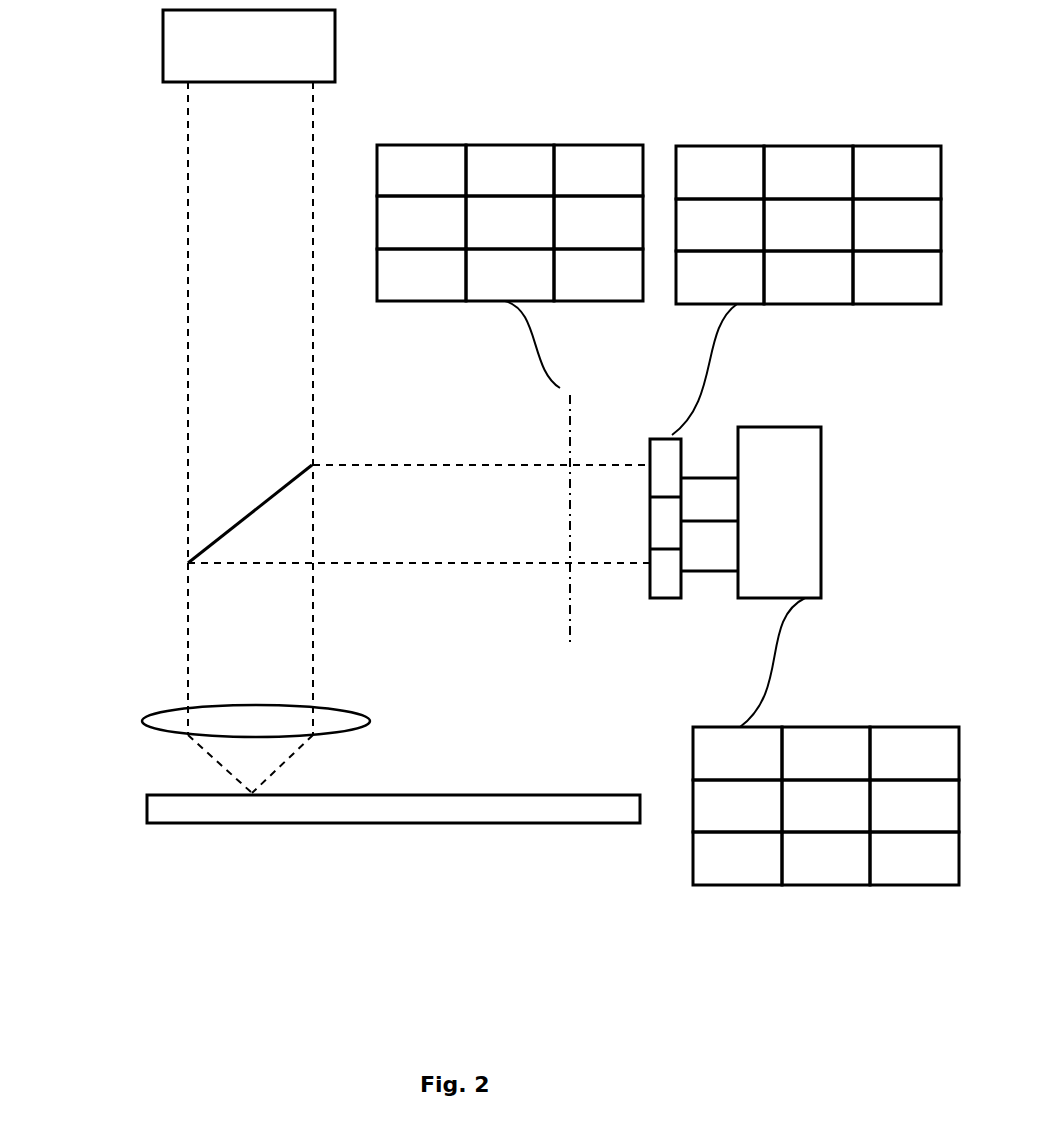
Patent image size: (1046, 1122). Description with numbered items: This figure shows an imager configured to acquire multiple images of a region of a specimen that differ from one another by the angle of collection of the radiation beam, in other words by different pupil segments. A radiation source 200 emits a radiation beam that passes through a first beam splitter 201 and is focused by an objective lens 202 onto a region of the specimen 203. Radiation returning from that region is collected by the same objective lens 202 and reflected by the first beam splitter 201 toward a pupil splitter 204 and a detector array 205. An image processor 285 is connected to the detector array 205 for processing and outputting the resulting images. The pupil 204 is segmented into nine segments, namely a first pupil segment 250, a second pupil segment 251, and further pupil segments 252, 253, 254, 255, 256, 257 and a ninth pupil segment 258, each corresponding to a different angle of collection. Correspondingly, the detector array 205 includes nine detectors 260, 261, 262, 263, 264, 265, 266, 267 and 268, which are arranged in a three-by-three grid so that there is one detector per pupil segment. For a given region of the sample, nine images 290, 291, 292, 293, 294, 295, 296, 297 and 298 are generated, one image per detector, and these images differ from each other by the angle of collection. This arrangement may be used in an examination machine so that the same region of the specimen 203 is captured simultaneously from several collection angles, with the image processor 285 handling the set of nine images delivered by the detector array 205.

The radiation source 200 is at (249, 46).
The first beam splitter 201 is at (213, 535).
The objective lens 202 is at (213, 707).
The specimen 203 is at (175, 823).
The pupil splitter 204 is at (552, 637).
The detector array 205 is at (662, 607).
The image processor 285 is at (800, 518).
The first pupil segment 250 is at (421, 170).
The second pupil segment 251 is at (510, 170).
The pupil segment 252 is at (598, 170).
The pupil segment 253 is at (421, 222).
The pupil segment 254 is at (510, 222).
The pupil segment 255 is at (598, 222).
The pupil segment 256 is at (421, 275).
The pupil segment 257 is at (510, 275).
The ninth pupil segment 258 is at (598, 275).
The detector 260 is at (720, 172).
The detector 261 is at (808, 172).
The detector 262 is at (897, 172).
The detector 263 is at (720, 225).
The detector 264 is at (808, 225).
The detector 265 is at (897, 225).
The detector 266 is at (720, 277).
The detector 267 is at (808, 277).
The detector 268 is at (897, 277).
The image 290 is at (737, 753).
The image 291 is at (826, 753).
The image 292 is at (914, 753).
The image 293 is at (737, 806).
The image 294 is at (826, 806).
The image 295 is at (914, 806).
The image 296 is at (737, 858).
The image 297 is at (826, 858).
The image 298 is at (914, 858).